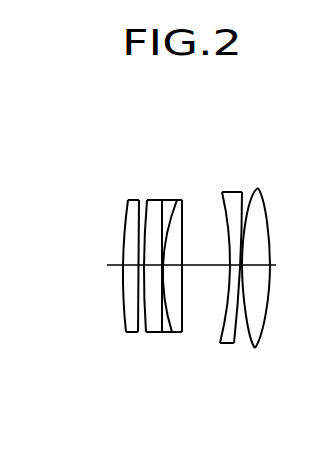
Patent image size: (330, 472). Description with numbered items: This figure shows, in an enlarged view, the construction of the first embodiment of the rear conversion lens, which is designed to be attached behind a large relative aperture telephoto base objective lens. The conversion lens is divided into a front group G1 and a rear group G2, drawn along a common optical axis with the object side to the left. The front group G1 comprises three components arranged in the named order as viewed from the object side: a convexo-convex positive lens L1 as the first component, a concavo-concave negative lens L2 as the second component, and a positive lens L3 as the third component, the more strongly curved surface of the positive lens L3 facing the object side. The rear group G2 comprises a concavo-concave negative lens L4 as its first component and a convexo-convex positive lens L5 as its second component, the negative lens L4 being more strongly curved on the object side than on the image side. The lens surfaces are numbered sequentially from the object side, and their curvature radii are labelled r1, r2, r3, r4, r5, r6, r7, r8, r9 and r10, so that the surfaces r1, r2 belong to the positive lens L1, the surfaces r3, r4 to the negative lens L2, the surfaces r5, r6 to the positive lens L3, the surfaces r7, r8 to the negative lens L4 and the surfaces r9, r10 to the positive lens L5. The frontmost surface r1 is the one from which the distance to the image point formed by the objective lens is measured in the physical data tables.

The front group G1 is at (200, 141).
The rear group G2 is at (285, 141).
The convexo-convex positive lens L1 is at (133, 200).
The concavo-concave negative lens L2 is at (160, 200).
The positive lens L3 is at (178, 200).
The concavo-concave negative lens L4 is at (234, 194).
The convexo-convex positive lens L5 is at (261, 189).
The lens surface curvature radius r1 is at (122, 325).
The lens surface curvature radius r2 is at (138, 333).
The lens surface curvature radius r3 is at (160, 334).
The lens surface curvature radius r4 is at (172, 334).
The lens surface curvature radius r5 is at (183, 275).
The lens surface curvature radius r6 is at (185, 279).
The lens surface curvature radius r7 is at (222, 323).
The lens surface curvature radius r8 is at (237, 326).
The lens surface curvature radius r9 is at (248, 327).
The lens surface curvature radius r10 is at (267, 313).